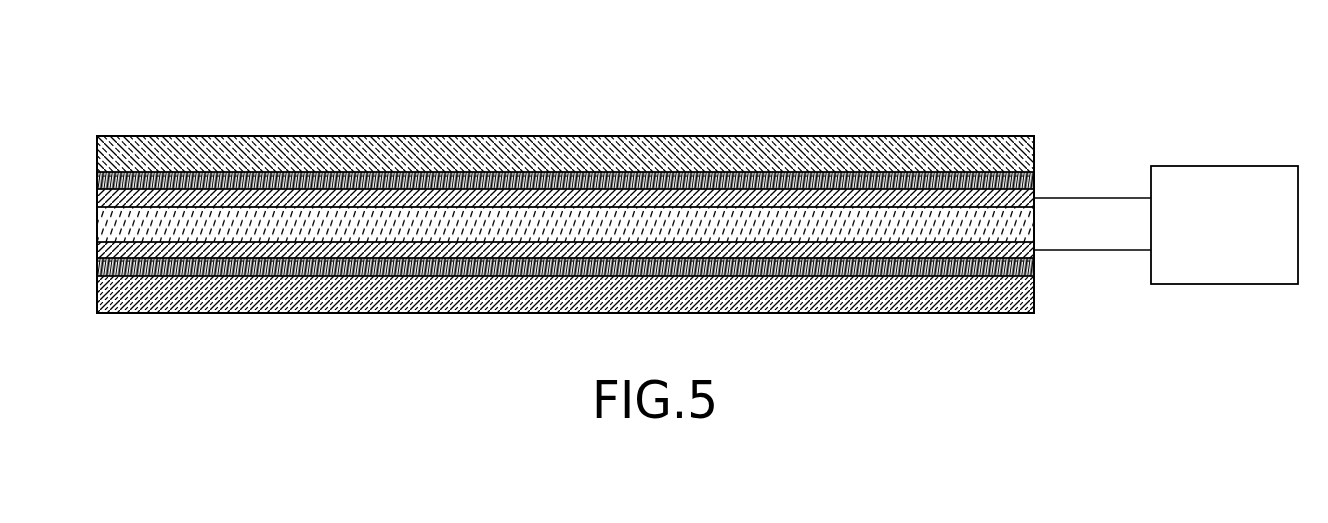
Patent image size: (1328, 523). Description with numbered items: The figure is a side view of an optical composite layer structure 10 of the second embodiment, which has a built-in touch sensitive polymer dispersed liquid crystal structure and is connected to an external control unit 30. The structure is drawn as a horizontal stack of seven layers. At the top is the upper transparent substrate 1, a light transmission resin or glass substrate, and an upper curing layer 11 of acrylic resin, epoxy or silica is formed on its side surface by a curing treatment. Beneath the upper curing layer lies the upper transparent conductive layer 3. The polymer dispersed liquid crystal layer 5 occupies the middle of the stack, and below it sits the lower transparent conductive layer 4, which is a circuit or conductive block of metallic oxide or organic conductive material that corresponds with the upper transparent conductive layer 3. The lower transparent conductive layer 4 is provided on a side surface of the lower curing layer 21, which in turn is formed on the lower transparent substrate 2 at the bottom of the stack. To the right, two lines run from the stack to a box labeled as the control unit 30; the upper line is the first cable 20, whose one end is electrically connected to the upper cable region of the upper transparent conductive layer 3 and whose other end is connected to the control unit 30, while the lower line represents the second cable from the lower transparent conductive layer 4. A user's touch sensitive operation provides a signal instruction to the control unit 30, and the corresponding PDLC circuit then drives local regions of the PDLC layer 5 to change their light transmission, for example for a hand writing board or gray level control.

The optical composite layer structure 10 is at (638, 46).
The upper transparent substrate 1 is at (1023, 153).
The upper curing layer 11 is at (1033, 180).
The upper transparent conductive layer 3 is at (98, 200).
The polymer dispersed liquid crystal layer 5 is at (110, 220).
The lower transparent conductive layer 4 is at (97, 250).
The lower curing layer 21 is at (1033, 270).
The lower transparent substrate 2 is at (1023, 298).
The first cable 20 is at (1127, 198).
The control unit 30 is at (1225, 170).